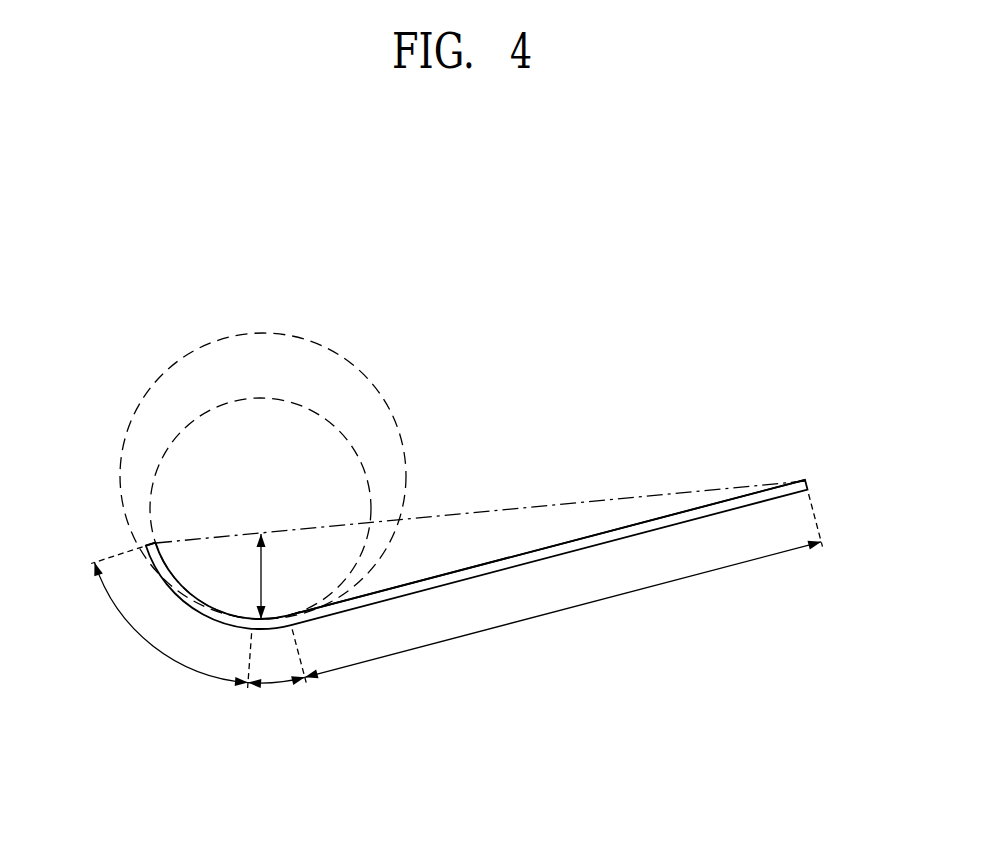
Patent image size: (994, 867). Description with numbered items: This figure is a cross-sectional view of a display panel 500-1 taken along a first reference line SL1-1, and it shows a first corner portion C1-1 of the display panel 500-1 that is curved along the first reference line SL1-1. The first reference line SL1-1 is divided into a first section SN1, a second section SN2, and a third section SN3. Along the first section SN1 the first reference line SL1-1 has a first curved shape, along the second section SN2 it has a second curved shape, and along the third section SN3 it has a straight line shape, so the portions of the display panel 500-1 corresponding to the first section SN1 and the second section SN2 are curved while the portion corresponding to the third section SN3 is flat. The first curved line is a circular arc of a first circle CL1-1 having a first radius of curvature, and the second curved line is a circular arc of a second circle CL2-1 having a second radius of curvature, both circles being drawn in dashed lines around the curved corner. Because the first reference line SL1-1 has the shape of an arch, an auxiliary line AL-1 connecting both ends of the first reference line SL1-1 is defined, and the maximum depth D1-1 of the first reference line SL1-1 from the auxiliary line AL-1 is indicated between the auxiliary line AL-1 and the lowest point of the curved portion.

The display panel 500-1 is at (807, 487).
The first reference line SL1-1 is at (655, 518).
The first corner portion C1-1 is at (154, 541).
The second circle CL2-1 is at (262, 333).
The first circle CL1-1 is at (340, 430).
The auxiliary line AL-1 is at (482, 512).
The maximum depth D1-1 is at (283, 576).
The first section SN1 is at (171, 617).
The second section SN2 is at (277, 671).
The third section SN3 is at (564, 586).